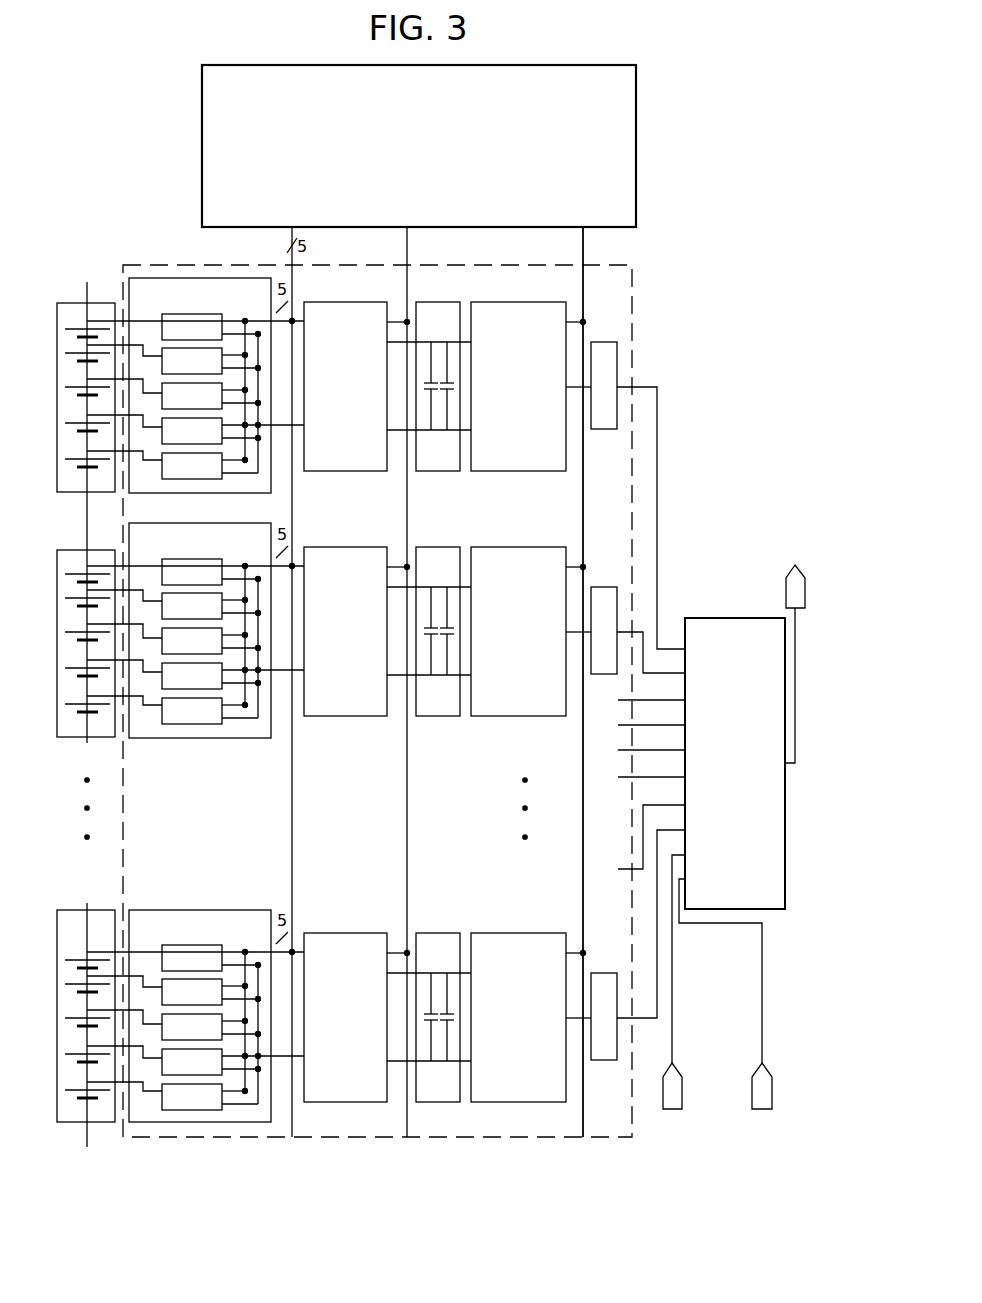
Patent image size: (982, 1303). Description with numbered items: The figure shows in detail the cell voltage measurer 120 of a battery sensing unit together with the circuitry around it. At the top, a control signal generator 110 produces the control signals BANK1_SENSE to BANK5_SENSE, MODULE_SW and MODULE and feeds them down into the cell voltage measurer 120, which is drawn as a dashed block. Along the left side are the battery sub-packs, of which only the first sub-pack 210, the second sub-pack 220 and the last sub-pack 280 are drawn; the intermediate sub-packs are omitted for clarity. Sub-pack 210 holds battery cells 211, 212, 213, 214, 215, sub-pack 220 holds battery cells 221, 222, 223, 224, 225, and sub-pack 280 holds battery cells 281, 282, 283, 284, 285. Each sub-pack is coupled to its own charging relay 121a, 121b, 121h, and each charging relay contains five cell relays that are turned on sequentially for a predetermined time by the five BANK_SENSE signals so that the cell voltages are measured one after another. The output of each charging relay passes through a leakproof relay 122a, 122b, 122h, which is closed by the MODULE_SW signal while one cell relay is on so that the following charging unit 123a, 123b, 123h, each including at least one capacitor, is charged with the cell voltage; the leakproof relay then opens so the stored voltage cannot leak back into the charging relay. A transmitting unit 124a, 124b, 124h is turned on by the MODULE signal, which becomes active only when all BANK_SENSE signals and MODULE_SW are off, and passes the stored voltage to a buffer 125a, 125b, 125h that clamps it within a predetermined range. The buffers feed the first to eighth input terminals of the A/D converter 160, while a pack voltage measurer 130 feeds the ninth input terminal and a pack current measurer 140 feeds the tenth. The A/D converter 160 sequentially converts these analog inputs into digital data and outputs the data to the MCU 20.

The control signal generator 110 is at (637, 138).
The cell voltage measurer 120 is at (634, 303).
The charging relay 121a is at (216, 358).
The charging relay 121b is at (216, 619).
The charging relay 121h is at (216, 1005).
The leakproof relay 122a is at (350, 302).
The leakproof relay 122b is at (350, 547).
The leakproof relay 122h is at (350, 933).
The charging unit 123a is at (440, 302).
The charging unit 123b is at (440, 547).
The charging unit 123h is at (440, 933).
The transmitting unit 124a is at (520, 302).
The transmitting unit 124b is at (520, 547).
The transmitting unit 124h is at (520, 933).
The buffer 125a is at (603, 342).
The buffer 125b is at (603, 587).
The buffer 125h is at (603, 973).
The A/D converter 160 is at (745, 618).
The MCU 20 is at (797, 642).
The pack voltage measurer 130 is at (667, 1135).
The pack current measurer 140 is at (754, 1135).
The sub-pack 210 is at (67, 303).
The sub-pack 220 is at (67, 550).
The sub-pack 280 is at (67, 910).
The battery cell 211 is at (68, 459).
The battery cell 212 is at (68, 423).
The battery cell 213 is at (68, 387).
The battery cell 214 is at (68, 353).
The battery cell 215 is at (68, 329).
The battery cell 221 is at (68, 704).
The battery cell 222 is at (68, 668).
The battery cell 223 is at (68, 632).
The battery cell 224 is at (68, 598).
The battery cell 225 is at (68, 574).
The battery cell 281 is at (68, 1090).
The battery cell 282 is at (68, 1054).
The battery cell 283 is at (68, 1018).
The battery cell 284 is at (68, 984).
The battery cell 285 is at (68, 960).